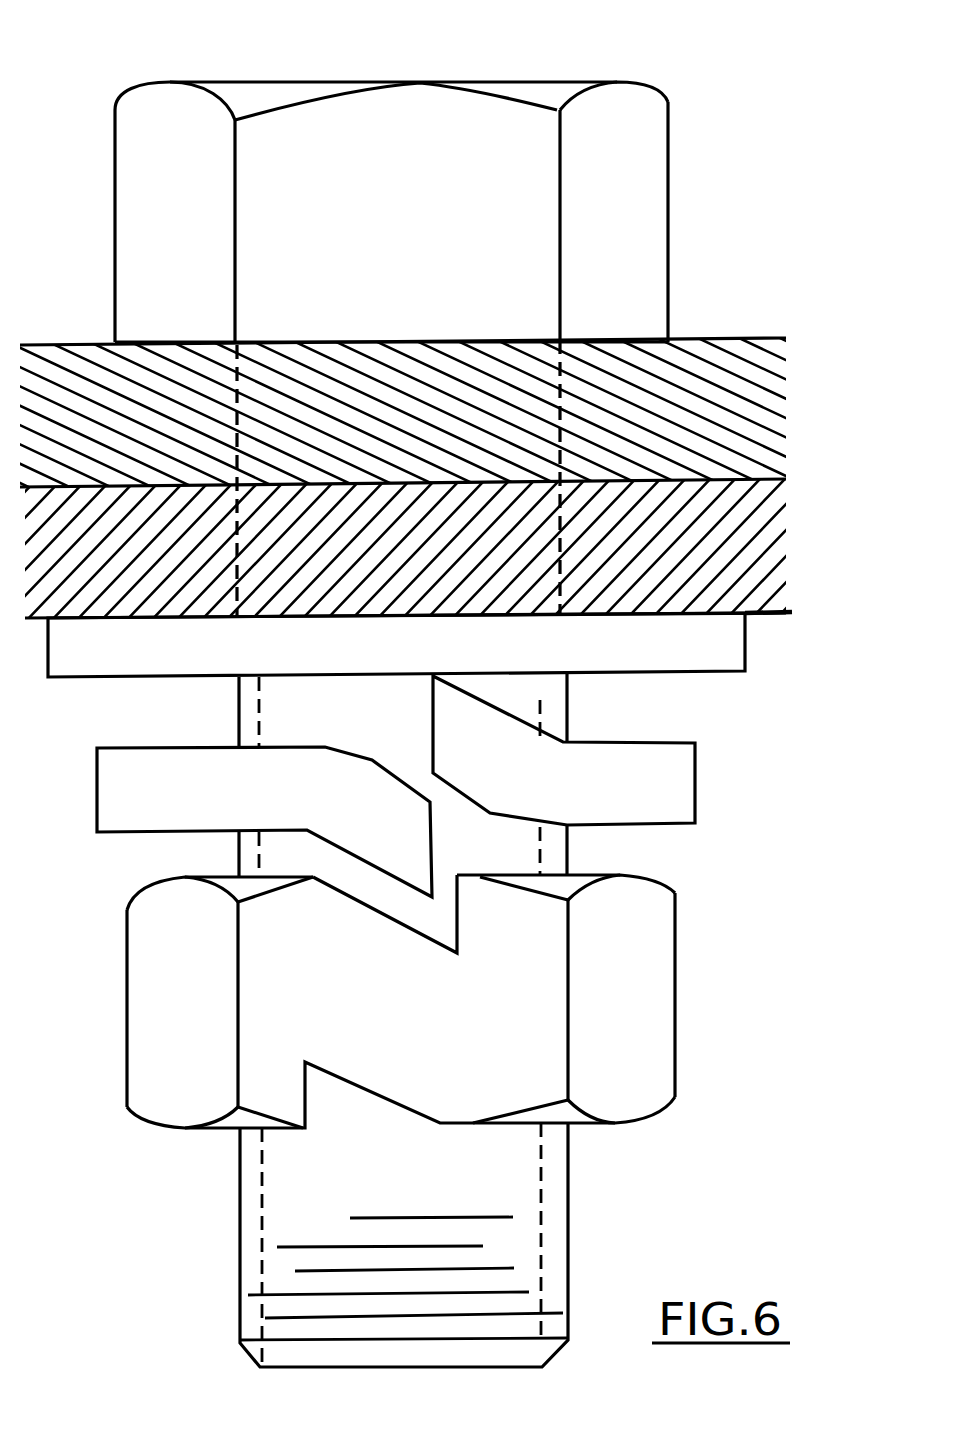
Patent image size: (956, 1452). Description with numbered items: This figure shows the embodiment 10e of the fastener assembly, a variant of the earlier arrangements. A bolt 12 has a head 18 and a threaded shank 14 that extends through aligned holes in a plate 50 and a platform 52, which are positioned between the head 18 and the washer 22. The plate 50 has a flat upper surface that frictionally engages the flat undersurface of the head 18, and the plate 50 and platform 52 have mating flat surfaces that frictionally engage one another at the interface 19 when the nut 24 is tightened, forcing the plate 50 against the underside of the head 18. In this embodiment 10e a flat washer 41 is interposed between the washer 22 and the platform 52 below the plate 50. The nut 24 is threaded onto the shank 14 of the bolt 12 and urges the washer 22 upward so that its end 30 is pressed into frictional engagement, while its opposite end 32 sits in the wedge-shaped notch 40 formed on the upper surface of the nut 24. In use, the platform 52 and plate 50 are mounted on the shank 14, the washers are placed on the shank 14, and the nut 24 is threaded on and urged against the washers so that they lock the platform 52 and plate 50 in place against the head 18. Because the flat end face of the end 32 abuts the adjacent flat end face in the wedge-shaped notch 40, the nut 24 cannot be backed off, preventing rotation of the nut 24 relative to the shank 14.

The embodiment 10e is at (747, 231).
The bolt 12 is at (445, 853).
The shank 14 is at (542, 1248).
The head 18 is at (652, 205).
The interface 19 is at (787, 479).
The washer 22 is at (438, 786).
The nut 24 is at (443, 1001).
The end 30 is at (433, 753).
The end 32 is at (433, 875).
The wedge-shaped notch 40 is at (410, 928).
The flat washer 41 is at (670, 673).
The plate 50 is at (732, 338).
The platform 52 is at (760, 617).